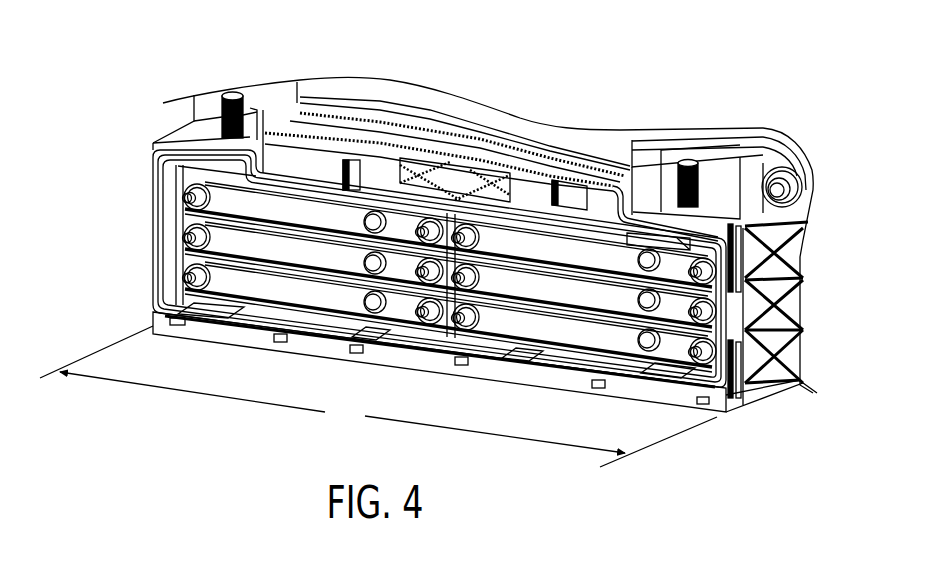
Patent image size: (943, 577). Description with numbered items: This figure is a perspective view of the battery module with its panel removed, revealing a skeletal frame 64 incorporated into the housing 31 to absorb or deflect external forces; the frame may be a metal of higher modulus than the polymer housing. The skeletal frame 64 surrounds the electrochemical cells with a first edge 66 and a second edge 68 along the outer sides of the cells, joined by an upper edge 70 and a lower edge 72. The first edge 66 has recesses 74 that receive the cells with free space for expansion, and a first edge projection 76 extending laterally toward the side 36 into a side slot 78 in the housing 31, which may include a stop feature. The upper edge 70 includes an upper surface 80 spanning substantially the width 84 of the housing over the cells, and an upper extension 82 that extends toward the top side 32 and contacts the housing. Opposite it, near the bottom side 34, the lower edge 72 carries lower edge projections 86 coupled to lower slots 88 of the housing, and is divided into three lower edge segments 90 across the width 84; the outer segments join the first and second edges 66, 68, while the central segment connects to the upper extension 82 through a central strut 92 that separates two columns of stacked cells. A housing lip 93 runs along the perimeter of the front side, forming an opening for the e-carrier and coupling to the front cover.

The housing 31 is at (202, 110).
The top side 32 is at (348, 60).
The bottom side 34 is at (563, 398).
The side 36 is at (146, 160).
The skeletal frame 64 is at (173, 177).
The first edge 66 is at (170, 236).
The second edge 68 is at (703, 317).
The upper edge 70 is at (265, 186).
The lower edge 72 is at (164, 313).
The recesses 74 is at (175, 224).
The first edge projection 76 is at (163, 260).
The side slot 78 is at (172, 252).
The upper surface 80 is at (587, 210).
The upper extension 82 is at (382, 170).
The width 84 is at (378, 396).
The lower edge projections 86 is at (652, 372).
The lower slots 88 is at (515, 352).
The lower edge segments 90 is at (232, 312).
The central strut 92 is at (450, 325).
The housing lip 93 is at (721, 224).